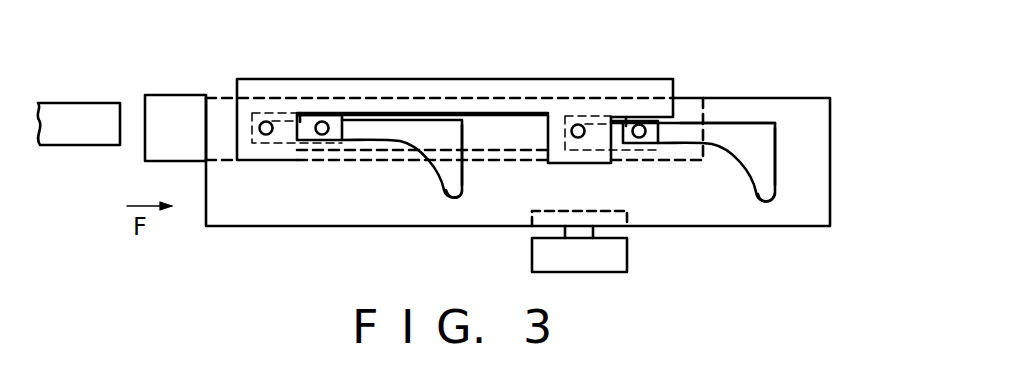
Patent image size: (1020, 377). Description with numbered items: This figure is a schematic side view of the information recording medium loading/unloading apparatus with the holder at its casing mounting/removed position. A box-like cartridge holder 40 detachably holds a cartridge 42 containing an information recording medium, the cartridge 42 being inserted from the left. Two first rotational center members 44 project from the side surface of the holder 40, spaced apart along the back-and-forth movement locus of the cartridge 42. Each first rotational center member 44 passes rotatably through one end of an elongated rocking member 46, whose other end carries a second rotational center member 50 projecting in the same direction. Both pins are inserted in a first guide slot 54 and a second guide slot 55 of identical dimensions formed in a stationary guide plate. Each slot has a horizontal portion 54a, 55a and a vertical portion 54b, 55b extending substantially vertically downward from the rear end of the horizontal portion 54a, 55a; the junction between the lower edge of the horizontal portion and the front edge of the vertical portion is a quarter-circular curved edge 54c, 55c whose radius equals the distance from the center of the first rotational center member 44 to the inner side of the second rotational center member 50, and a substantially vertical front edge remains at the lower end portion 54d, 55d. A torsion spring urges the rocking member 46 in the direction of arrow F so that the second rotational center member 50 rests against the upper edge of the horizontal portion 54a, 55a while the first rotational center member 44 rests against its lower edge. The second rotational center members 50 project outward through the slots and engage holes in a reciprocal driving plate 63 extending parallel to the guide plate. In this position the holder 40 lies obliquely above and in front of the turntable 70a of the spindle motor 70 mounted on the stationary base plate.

The cartridge holder 40 is at (171, 95).
The cartridge 42 is at (82, 146).
The first rotational center member 44 is at (322, 140).
The rocking member 46 is at (251, 118).
The second rotational center member 50 is at (262, 137).
The first guide slot 54 is at (446, 141).
The horizontal portion 54a is at (306, 122).
The vertical portion 54b is at (449, 158).
The curved edge 54c is at (430, 113).
The lower end portion 54d is at (442, 191).
The second guide slot 55 is at (776, 123).
The horizontal portion 55a is at (630, 118).
The vertical portion 55b is at (768, 150).
The curved edge 55c is at (753, 152).
The lower end portion 55d is at (765, 192).
The reciprocal driving plate 63 is at (527, 79).
The spindle motor 70 is at (627, 257).
The turntable 70a is at (628, 212).